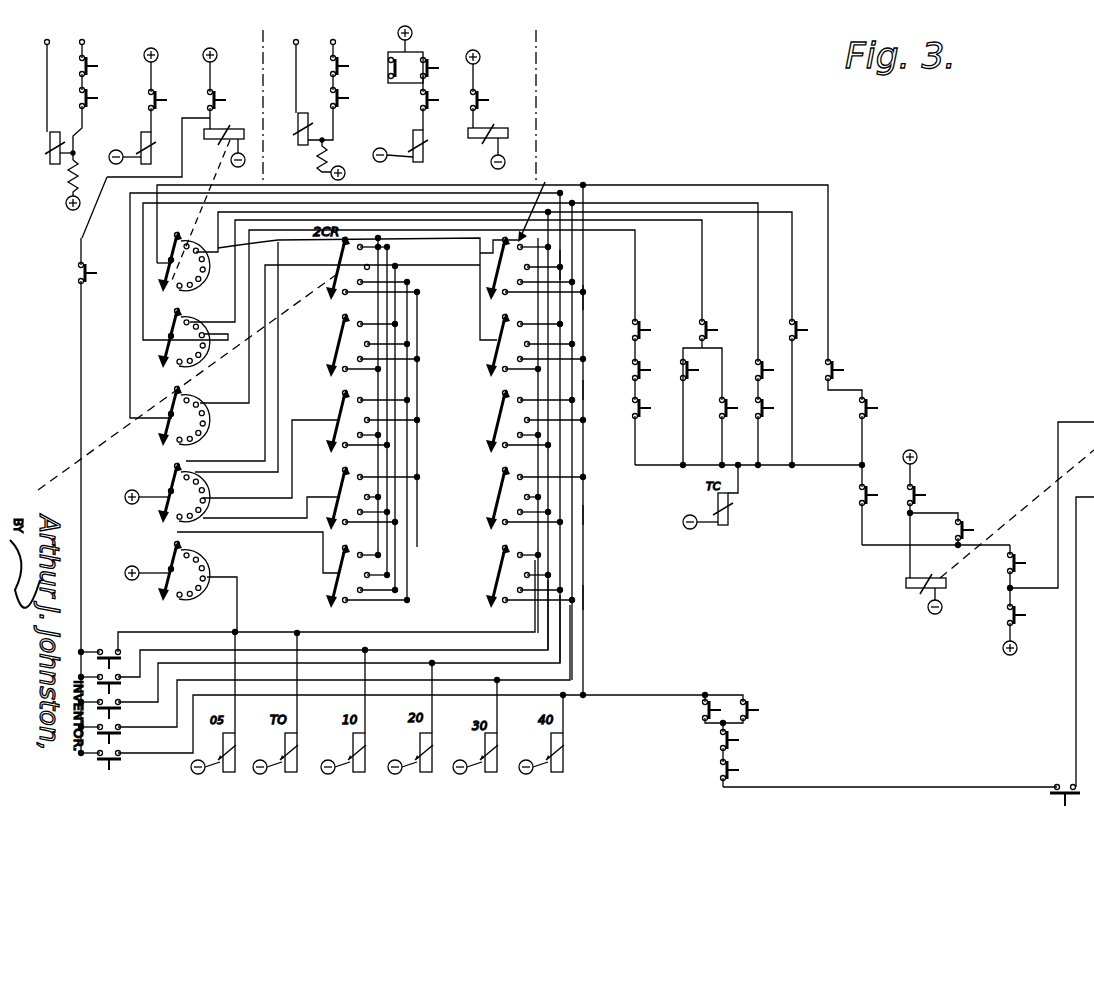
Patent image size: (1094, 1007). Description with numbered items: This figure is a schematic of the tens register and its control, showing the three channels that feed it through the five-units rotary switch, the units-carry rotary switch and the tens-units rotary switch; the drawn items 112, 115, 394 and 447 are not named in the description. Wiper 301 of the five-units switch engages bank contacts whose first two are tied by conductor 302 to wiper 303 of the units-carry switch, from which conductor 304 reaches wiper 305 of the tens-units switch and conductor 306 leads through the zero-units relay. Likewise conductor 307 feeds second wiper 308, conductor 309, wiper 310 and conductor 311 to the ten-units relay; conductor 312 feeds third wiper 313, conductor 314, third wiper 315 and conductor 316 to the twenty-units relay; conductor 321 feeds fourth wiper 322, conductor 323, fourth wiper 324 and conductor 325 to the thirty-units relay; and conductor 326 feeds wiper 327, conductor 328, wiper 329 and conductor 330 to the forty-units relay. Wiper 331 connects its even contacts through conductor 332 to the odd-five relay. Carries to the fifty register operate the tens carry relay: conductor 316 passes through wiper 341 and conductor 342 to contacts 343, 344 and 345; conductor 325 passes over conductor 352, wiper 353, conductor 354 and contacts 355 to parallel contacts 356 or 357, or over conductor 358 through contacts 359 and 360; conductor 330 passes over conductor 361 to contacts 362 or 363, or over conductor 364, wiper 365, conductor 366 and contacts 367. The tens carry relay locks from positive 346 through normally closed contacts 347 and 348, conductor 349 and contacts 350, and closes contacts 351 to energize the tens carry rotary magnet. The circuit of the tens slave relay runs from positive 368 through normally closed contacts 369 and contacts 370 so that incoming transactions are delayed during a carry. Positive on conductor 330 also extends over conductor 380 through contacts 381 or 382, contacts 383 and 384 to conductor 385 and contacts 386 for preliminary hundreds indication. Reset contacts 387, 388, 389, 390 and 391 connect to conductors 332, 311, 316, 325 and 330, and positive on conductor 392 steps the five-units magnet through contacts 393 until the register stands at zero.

The relay circuit 5B/5AK 112 is at (47, 96).
The relay circuit TB/TAK 115 is at (297, 79).
The wiper 301 is at (166, 490).
The conductor 302 is at (221, 460).
The wiper 303 is at (330, 266).
The conductor 304 is at (455, 242).
The wiper 305 is at (562, 264).
The conductor 306 is at (326, 640).
The conductor 307 is at (242, 472).
The second wiper 308 is at (332, 332).
The conductor 309 is at (504, 292).
The wiper 310 is at (500, 362).
The conductor 311 is at (583, 298).
The conductor 312 is at (250, 500).
The third wiper 313 is at (336, 404).
The conductor 314 is at (478, 328).
The third wiper 315 is at (506, 412).
The conductor 316 is at (583, 390).
The conductor 321 is at (250, 522).
The fourth wiper 322 is at (344, 482).
The conductor 323 is at (407, 448).
The fourth wiper 324 is at (498, 478).
The conductor 325 is at (583, 516).
The conductor 326 is at (252, 540).
The wiper 327 is at (332, 562).
The conductor 328 is at (417, 547).
The wiper 329 is at (498, 558).
The conductor 330 is at (585, 595).
The wiper 331 is at (166, 568).
The conductor 332 is at (216, 577).
The wiper 341 is at (172, 396).
The conductor 342 is at (222, 398).
The contacts 343 is at (636, 335).
The contacts 344 is at (630, 370).
The contacts 345 is at (630, 409).
The positive 346 is at (1002, 653).
The normally closed contacts 347 is at (1016, 621).
The normally closed contacts 348 is at (1016, 568).
The conductor 349 is at (866, 548).
The normally open contacts 350 is at (878, 510).
The contacts 351 is at (925, 492).
The conductor 352 is at (402, 201).
The wiper 353 is at (165, 334).
The conductor 354 is at (222, 330).
The normally open contacts 355 is at (712, 328).
The contacts 356 is at (702, 406).
The contacts 357 is at (718, 416).
The conductor 358 is at (756, 208).
The normally open contacts 359 is at (774, 374).
The contacts 360 is at (766, 416).
The conductor 361 is at (688, 186).
The contacts 362 is at (846, 370).
The contacts 363 is at (878, 410).
The conductor 364 is at (497, 270).
The wiper 365 is at (165, 258).
The conductor 366 is at (494, 430).
The normally open contacts 367 is at (805, 387).
The positive 368 is at (413, 35).
The normally closed contacts 369 is at (400, 84).
The normally open contacts 370 is at (433, 105).
The conductor 380 is at (650, 695).
The contact 381 is at (702, 712).
The contacts 382 is at (758, 713).
The contacts 383 is at (740, 745).
The contacts 384 is at (740, 770).
The conductor 385 is at (936, 785).
The contacts 386 is at (1048, 804).
The reset contacts 387 is at (120, 648).
The reset contacts 388 is at (314, 640).
The reset contacts 389 is at (320, 660).
The reset contacts 390 is at (325, 677).
The reset contacts 391 is at (112, 772).
The conductor 392 is at (74, 415).
The normally closed contacts 393 is at (85, 283).
The conductor 394 is at (1066, 421).
The contact RST 447 is at (980, 528).